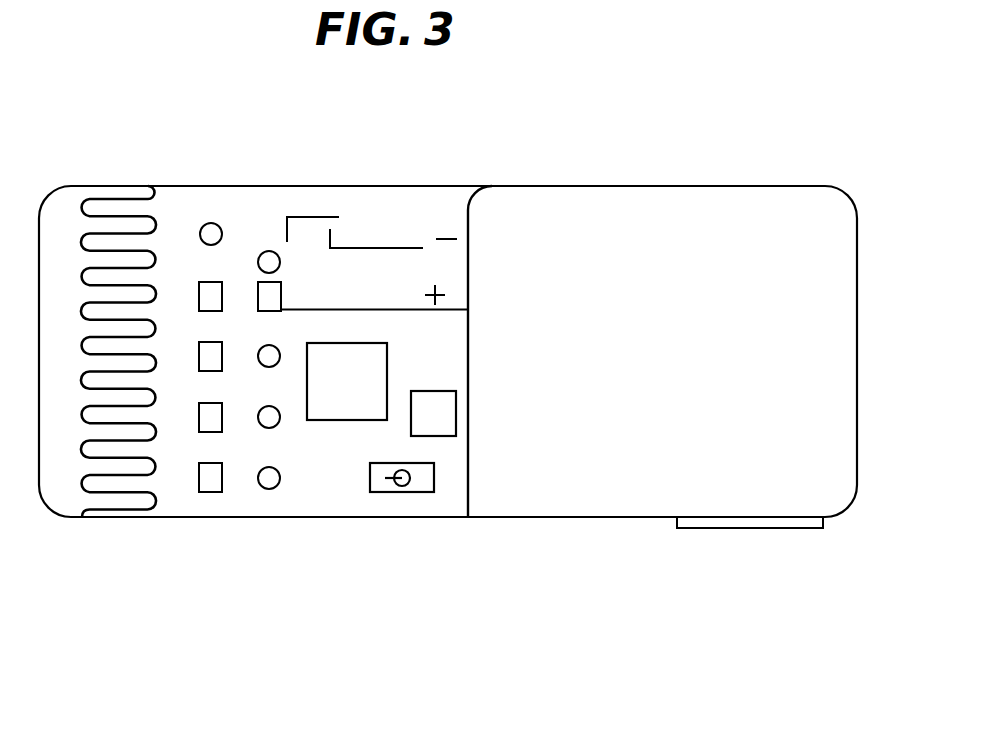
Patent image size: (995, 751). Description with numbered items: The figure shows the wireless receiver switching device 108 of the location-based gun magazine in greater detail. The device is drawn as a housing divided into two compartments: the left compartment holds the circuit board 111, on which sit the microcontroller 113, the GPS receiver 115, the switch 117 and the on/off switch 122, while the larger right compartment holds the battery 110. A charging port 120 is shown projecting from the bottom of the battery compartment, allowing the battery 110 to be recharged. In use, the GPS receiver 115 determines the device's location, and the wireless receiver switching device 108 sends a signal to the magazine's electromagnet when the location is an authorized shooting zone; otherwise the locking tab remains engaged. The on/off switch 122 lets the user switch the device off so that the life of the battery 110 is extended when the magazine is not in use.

The wireless receiver switching device 108 is at (184, 585).
The battery 110 is at (743, 207).
The circuit board 111 is at (245, 193).
The microcontroller 113 is at (348, 396).
The GPS receiver 115 is at (439, 414).
The switch 117 is at (381, 243).
The charging port 120 is at (727, 542).
The on/off switch 122 is at (410, 492).